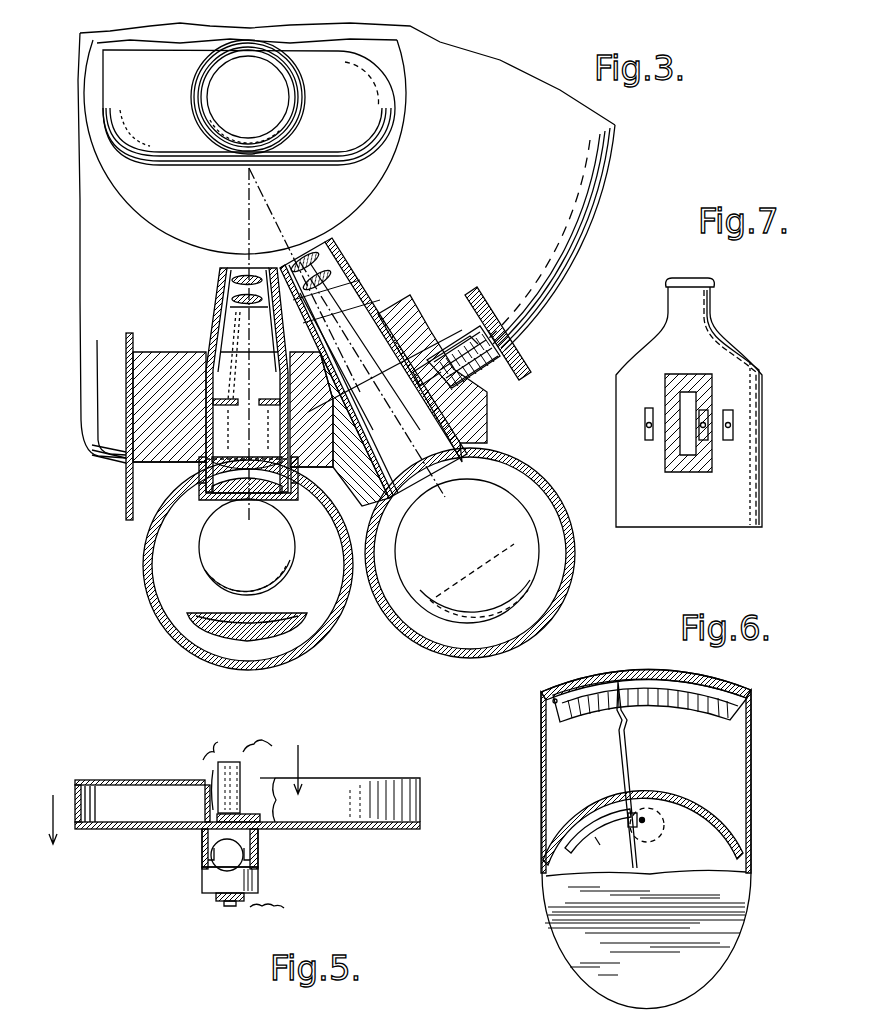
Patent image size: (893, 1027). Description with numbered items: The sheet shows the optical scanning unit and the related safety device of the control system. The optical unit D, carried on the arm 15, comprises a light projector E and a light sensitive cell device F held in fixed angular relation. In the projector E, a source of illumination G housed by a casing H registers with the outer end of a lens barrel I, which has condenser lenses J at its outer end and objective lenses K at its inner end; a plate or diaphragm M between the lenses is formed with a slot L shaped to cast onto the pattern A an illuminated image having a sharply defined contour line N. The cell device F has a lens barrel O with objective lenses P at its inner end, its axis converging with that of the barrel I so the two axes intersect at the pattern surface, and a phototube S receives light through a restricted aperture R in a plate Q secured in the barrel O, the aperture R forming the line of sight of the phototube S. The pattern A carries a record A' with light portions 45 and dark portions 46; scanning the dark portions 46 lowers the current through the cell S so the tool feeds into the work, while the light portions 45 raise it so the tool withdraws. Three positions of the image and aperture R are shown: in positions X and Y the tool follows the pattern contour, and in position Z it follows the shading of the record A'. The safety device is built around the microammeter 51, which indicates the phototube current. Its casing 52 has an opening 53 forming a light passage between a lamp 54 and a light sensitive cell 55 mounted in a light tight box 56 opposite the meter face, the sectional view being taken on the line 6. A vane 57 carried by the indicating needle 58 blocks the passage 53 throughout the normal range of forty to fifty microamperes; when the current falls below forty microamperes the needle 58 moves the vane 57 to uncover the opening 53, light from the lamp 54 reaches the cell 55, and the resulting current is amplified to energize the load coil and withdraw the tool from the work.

In FIG. 3, the pattern A is at (346, 240).
In FIG. 7, the pattern A is at (699, 402).
In FIG. 3, the contour line N is at (249, 168).
In FIG. 7, the contour line N is at (656, 410).
In FIG. 3, the arm 15 is at (104, 462).
In FIG. 3, the optical unit D is at (206, 342).
In FIG. 3, the light projector E is at (222, 316).
In FIG. 5, the light projector E is at (224, 906).
In FIG. 3, the lens barrel I is at (210, 306).
In FIG. 3, the objective lenses K is at (232, 270).
In FIG. 3, the plate or diaphragm M is at (258, 404).
In FIG. 3, the slot L is at (262, 432).
In FIG. 3, the condenser lenses J is at (268, 458).
In FIG. 3, the light sensitive cell device F is at (340, 286).
In FIG. 3, the objective lenses P is at (318, 250).
In FIG. 3, the lens barrel O is at (368, 300).
In FIG. 3, the plate Q is at (408, 396).
In FIG. 3, the aperture R is at (372, 382).
In FIG. 7, the aperture R is at (646, 432).
In FIG. 3, the casing H is at (144, 578).
In FIG. 3, the source of illumination G is at (210, 578).
In FIG. 3, the phototube S is at (460, 628).
In FIG. 7, the dark portions 46 is at (691, 470).
In FIG. 7, the light portions 45 is at (688, 392).
In FIG. 7, the position X is at (647, 406).
In FIG. 7, the position Y is at (733, 450).
In FIG. 7, the position Z is at (705, 440).
In FIG. 7, the record A' is at (649, 482).
In FIG. 6, the microammeter 51 is at (538, 910).
In FIG. 5, the microammeter 51 is at (336, 774).
In FIG. 6, the casing 52 is at (540, 866).
In FIG. 5, the casing 52 is at (310, 832).
In FIG. 6, the opening 53 is at (650, 824).
In FIG. 5, the opening 53 is at (210, 848).
In FIG. 6, the lamp 54 is at (658, 849).
In FIG. 5, the lamp 54 is at (214, 874).
In FIG. 5, the light sensitive cell 55 is at (250, 762).
In FIG. 6, the light tight box 56 is at (565, 832).
In FIG. 5, the light tight box 56 is at (205, 790).
In FIG. 6, the vane or valve member 57 is at (606, 843).
In FIG. 5, the vane or valve member 57 is at (215, 816).
In FIG. 6, the indicating needle 58 is at (634, 768).
In FIG. 5, the indicating needle 58 is at (118, 822).
In FIG. 5, the section line 6 is at (176, 794).